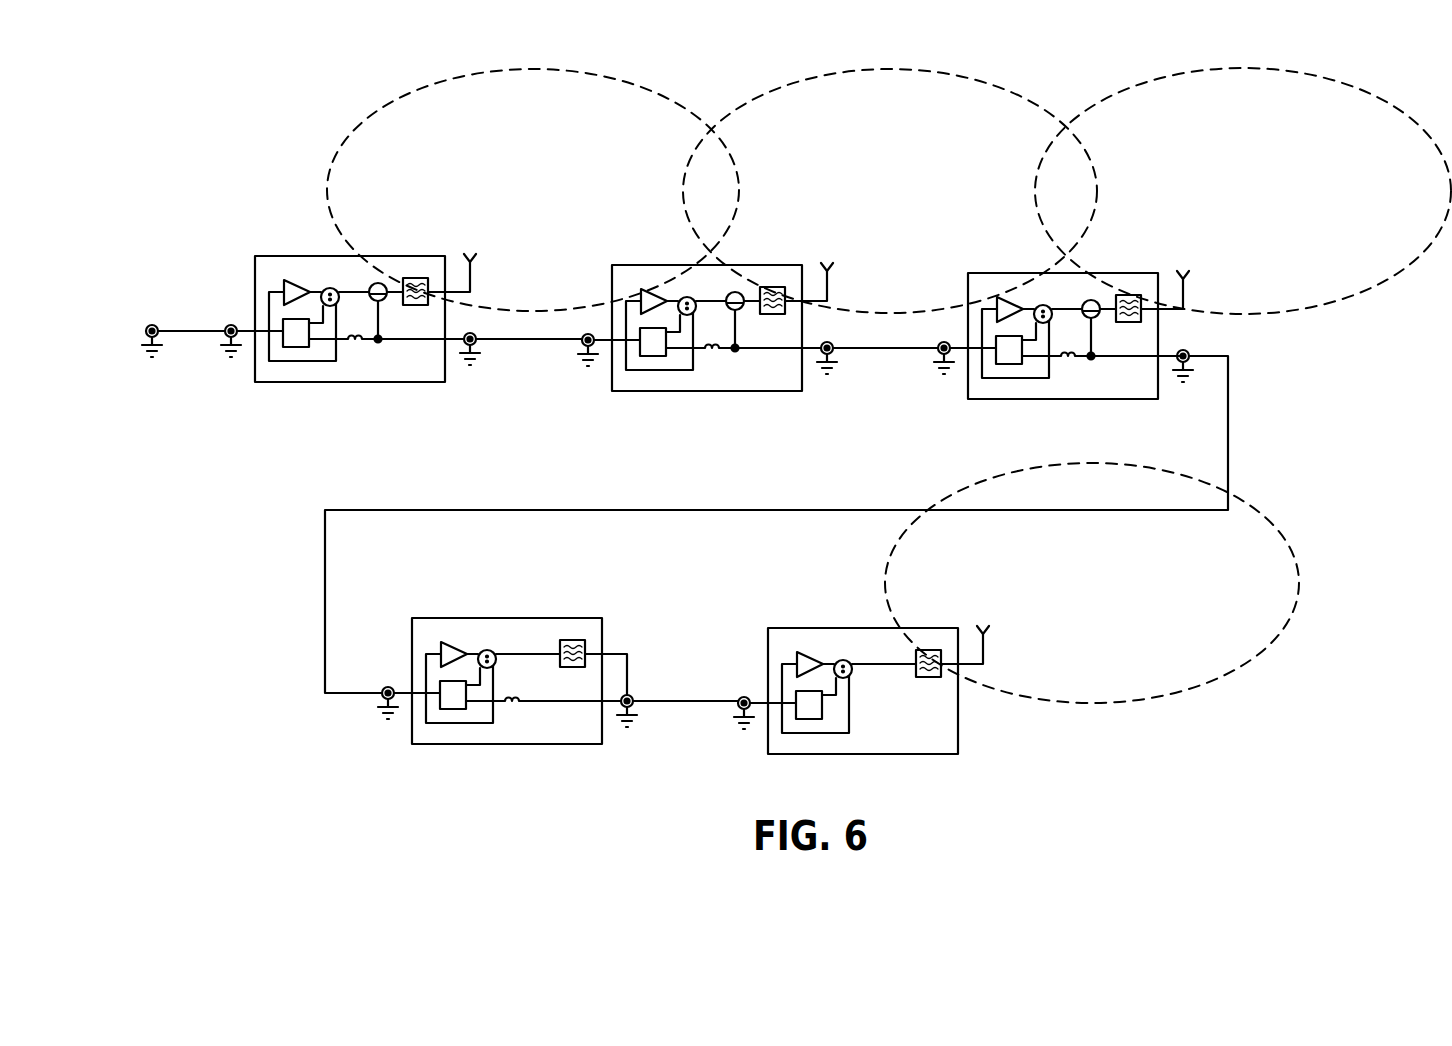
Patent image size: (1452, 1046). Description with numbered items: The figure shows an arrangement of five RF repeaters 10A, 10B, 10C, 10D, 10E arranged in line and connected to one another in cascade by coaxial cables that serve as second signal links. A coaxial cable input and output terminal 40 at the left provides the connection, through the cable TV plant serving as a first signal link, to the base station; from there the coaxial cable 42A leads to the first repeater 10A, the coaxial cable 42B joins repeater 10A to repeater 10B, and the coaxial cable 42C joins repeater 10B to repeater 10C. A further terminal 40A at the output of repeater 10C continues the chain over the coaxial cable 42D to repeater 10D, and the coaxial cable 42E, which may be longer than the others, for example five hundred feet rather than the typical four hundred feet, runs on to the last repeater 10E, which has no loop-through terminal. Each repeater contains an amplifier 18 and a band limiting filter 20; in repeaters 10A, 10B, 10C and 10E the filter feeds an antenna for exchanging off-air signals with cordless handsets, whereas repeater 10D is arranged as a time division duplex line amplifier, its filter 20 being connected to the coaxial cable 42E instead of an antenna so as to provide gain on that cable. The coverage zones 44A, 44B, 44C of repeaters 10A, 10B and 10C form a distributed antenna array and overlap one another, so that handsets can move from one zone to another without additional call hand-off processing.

The RF repeater 10A is at (345, 292).
The RF repeater 10B is at (603, 277).
The RF repeater 10C is at (958, 279).
The RF repeater 10D is at (507, 662).
The RF repeater 10E is at (816, 610).
The amplifier 18 is at (288, 280).
The band limiting filter 20 is at (560, 625).
The coaxial cable input and output terminal 40 is at (154, 325).
The coaxial cable input and output terminal 40A is at (1188, 351).
The coaxial cable 42A is at (186, 338).
The coaxial cable 42B is at (522, 345).
The coaxial cable 42C is at (883, 352).
The coaxial cable 42D is at (1228, 418).
The coaxial cable 42E is at (677, 700).
The coverage zone 44A is at (352, 134).
The coverage zone 44B is at (1004, 92).
The coverage zone 44C is at (1365, 290).